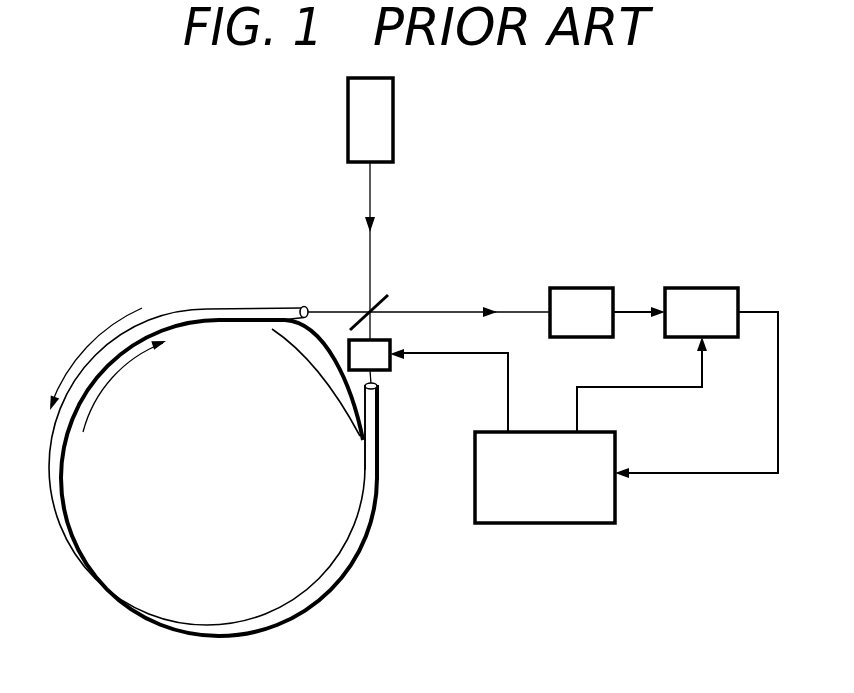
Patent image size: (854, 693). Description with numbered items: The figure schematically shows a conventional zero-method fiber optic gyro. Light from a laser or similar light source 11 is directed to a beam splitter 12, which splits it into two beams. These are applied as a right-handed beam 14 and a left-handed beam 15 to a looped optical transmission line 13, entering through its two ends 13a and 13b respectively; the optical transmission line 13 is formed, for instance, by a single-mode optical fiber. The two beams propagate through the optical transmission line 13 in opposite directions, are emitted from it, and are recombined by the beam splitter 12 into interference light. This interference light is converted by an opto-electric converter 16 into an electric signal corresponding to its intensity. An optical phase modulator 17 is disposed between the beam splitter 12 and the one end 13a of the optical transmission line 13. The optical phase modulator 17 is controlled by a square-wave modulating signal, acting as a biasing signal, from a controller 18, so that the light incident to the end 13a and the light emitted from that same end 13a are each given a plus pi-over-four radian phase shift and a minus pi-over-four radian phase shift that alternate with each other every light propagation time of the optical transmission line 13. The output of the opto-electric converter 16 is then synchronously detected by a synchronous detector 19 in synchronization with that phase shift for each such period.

The light source 11 is at (394, 100).
The beam splitter 12 is at (388, 294).
The optical transmission line 13 is at (189, 310).
The end of the optical transmission line 13a is at (377, 386).
The end of the optical transmission line 13b is at (308, 306).
The right-handed beam 14 is at (133, 364).
The left-handed beam 15 is at (119, 320).
The opto-electric converter 16 is at (597, 288).
The optical phase modulator 17 is at (391, 343).
The controller 18 is at (596, 524).
The synchronous detector 19 is at (718, 288).